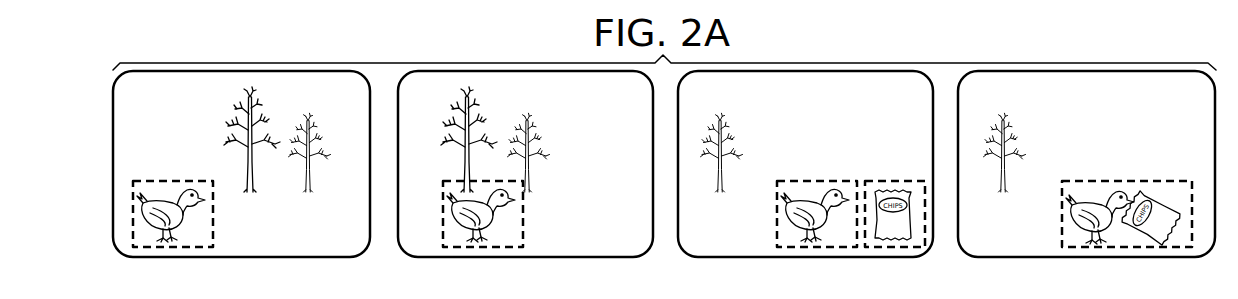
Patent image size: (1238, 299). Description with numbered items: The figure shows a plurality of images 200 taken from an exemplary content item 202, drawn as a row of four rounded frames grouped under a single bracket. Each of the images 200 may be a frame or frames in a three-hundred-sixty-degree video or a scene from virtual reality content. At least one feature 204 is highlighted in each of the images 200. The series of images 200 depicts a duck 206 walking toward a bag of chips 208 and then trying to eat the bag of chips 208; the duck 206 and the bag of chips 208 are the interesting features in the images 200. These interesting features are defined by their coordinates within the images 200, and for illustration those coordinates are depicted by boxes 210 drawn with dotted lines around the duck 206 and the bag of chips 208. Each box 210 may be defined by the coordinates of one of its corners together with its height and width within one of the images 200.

The images 200 is at (403, 256).
The content item 202 is at (104, 128).
The feature 204 is at (664, 165).
The duck 206 is at (200, 192).
The bag of chips 208 is at (900, 189).
The box 210 is at (140, 248).